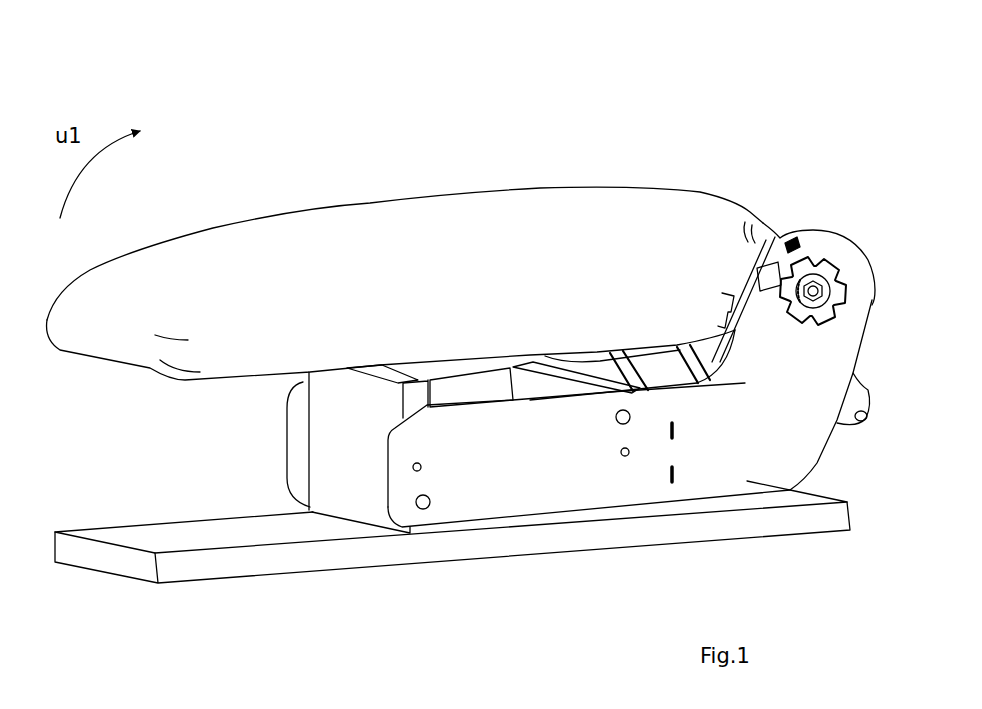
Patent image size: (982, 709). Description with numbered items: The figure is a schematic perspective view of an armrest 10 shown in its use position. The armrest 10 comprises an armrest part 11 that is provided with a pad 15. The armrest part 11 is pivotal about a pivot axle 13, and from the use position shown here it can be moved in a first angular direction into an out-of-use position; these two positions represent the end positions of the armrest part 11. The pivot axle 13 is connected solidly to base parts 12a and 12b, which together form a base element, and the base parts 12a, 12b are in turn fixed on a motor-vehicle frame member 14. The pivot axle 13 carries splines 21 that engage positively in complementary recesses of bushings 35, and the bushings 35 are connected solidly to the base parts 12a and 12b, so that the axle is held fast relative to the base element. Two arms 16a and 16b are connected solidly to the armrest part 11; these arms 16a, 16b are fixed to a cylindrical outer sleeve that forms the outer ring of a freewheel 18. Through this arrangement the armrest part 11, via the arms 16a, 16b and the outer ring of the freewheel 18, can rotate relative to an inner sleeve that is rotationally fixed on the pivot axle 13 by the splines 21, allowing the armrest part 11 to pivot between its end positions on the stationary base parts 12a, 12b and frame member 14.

The armrest 10 is at (716, 151).
The armrest part 11 is at (556, 224).
The pad 15 is at (365, 224).
The base part 12a is at (528, 462).
The base part 12b is at (300, 468).
The pivot axle 13 is at (824, 272).
The motor-vehicle frame member 14 is at (361, 549).
The arm 16a is at (712, 349).
The arm 16b is at (650, 357).
The freewheel 18 is at (786, 228).
The splines 21 is at (812, 266).
The bushings 35 is at (840, 306).